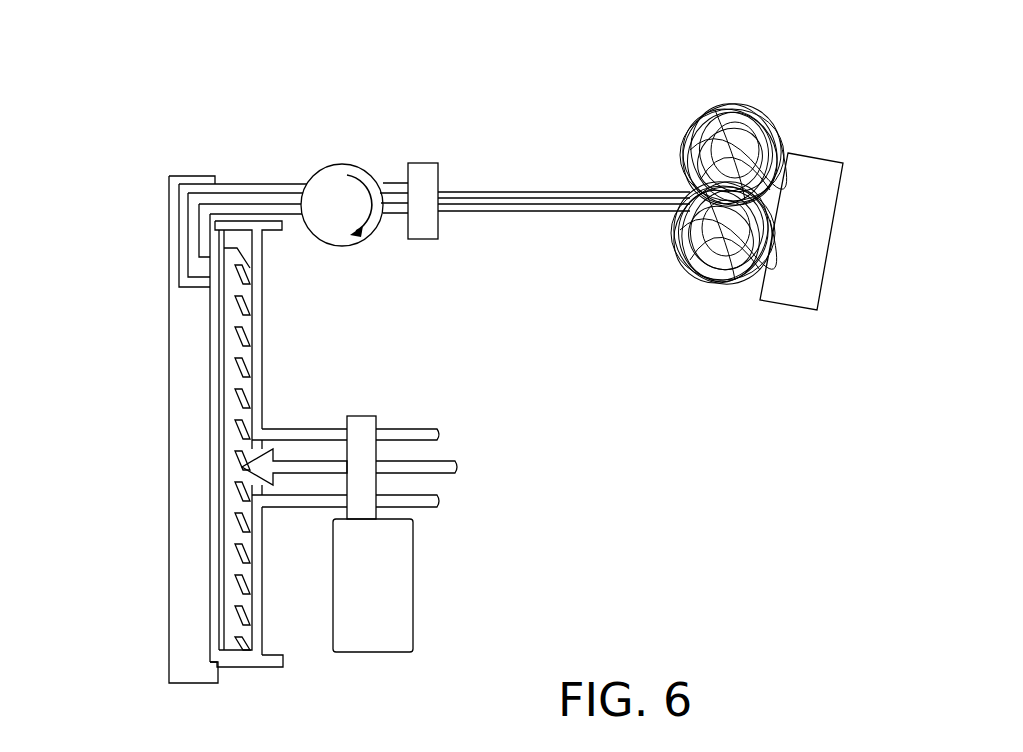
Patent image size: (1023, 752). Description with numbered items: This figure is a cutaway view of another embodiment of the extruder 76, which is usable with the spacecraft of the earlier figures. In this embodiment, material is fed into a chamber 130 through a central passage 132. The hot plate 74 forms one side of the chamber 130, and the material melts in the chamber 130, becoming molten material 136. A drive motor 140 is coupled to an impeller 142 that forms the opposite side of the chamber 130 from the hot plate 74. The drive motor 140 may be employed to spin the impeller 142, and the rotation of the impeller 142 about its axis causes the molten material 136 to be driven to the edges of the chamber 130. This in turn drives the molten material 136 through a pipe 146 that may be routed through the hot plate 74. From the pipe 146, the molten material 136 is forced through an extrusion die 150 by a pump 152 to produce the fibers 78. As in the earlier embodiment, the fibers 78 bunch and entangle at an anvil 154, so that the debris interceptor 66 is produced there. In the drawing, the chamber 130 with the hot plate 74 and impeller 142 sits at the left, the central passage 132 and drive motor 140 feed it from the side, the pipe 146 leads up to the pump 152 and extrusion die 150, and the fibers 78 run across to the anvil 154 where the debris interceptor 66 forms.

The extruder 76 is at (182, 106).
The hot plate 74 is at (175, 375).
The pipe 146 is at (192, 224).
The chamber 130 is at (250, 320).
The impeller 142 is at (265, 600).
The molten material 136 is at (258, 378).
The pump 152 is at (339, 163).
The extrusion die 150 is at (422, 163).
The fibers 78 is at (550, 168).
The debris interceptor 66 is at (745, 113).
The anvil 154 is at (822, 215).
The central passage 132 is at (430, 455).
The drive motor 140 is at (395, 558).